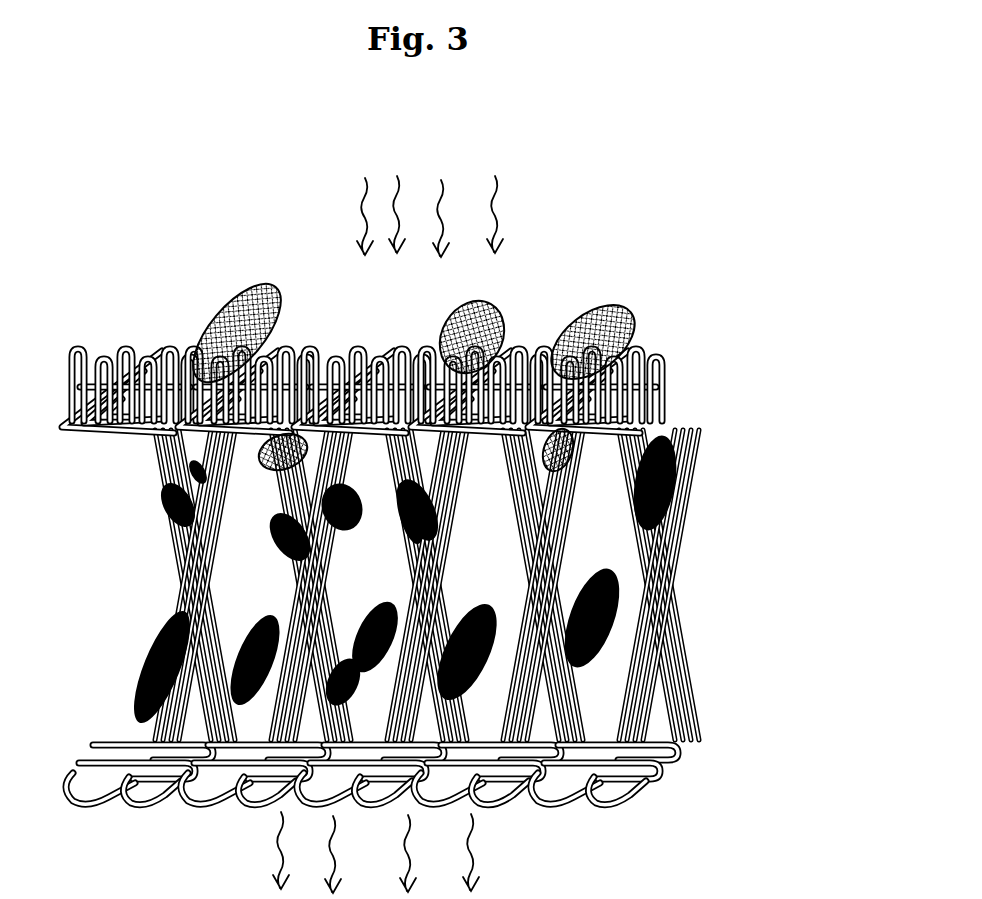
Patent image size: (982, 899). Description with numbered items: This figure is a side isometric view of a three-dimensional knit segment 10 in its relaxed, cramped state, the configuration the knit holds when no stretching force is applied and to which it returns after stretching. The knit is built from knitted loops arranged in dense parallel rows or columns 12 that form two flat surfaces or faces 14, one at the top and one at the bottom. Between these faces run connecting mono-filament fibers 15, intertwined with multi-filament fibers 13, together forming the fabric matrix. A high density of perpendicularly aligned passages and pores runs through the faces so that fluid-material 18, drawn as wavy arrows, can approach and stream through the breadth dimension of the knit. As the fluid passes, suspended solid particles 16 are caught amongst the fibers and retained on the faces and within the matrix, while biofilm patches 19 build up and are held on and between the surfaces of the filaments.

The 3D knit segment 10 is at (426, 504).
The dense parallel rows or columns 12 is at (663, 362).
The multi-filament fibers 13 is at (187, 545).
The flat surfaces or faces 14 is at (430, 565).
The mono-filament fibers 15 is at (180, 455).
The suspended solid particles 16 is at (215, 335).
The fluid-material 18 is at (367, 214).
The biofilm patches 19 is at (150, 660).